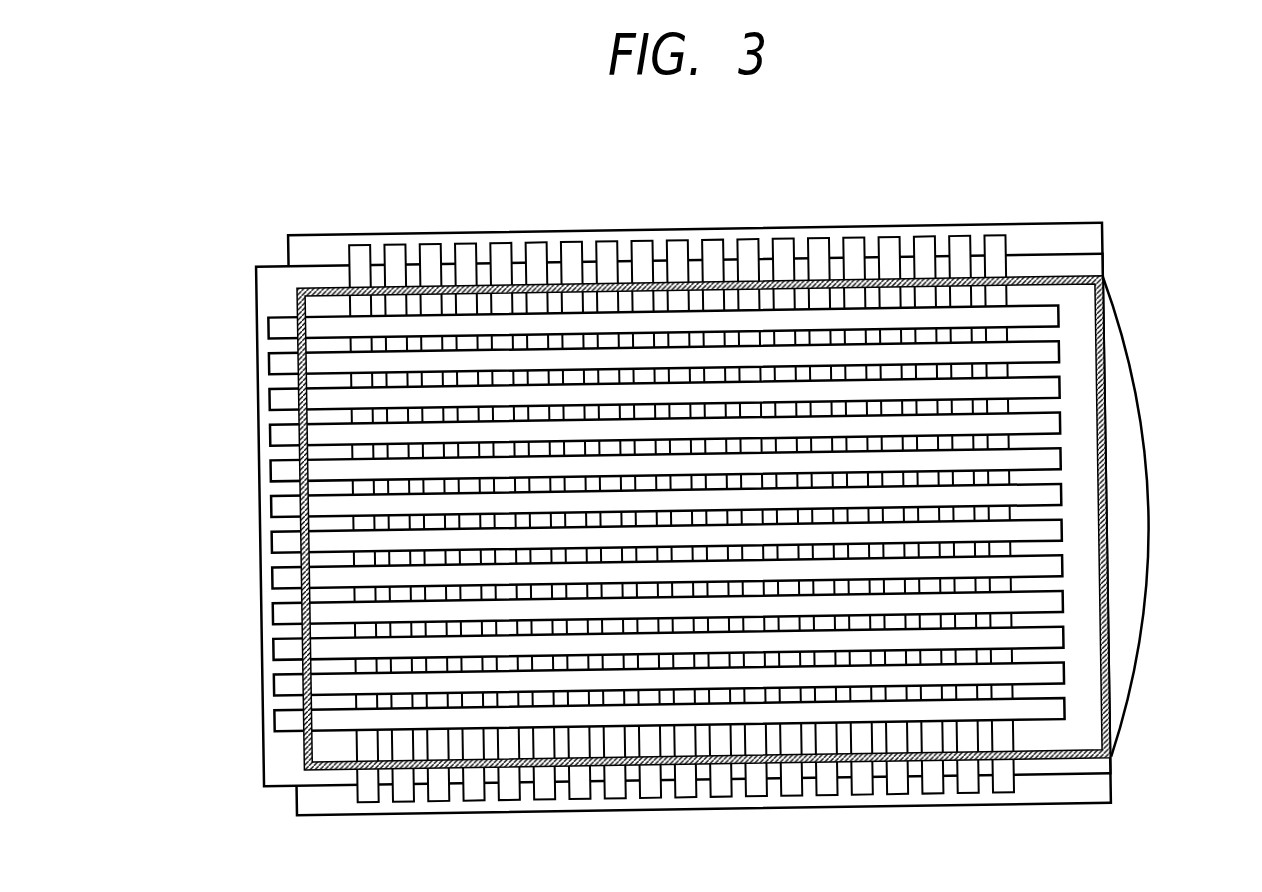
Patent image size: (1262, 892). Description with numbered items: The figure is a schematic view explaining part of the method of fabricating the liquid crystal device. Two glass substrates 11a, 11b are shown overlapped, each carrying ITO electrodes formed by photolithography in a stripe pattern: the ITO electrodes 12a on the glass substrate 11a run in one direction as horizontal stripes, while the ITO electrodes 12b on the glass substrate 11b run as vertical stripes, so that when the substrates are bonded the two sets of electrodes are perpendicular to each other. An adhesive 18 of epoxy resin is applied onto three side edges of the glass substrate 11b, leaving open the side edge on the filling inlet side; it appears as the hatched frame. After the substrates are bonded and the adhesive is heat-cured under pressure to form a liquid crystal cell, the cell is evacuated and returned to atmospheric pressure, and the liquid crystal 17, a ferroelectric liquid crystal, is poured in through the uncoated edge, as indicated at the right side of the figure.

The glass substrate 11a is at (265, 287).
The glass substrate 11b is at (323, 240).
The ITO electrodes 12a is at (275, 330).
The ITO electrodes 12b is at (538, 248).
The liquid crystal 17 is at (1160, 470).
The adhesive 18 is at (1062, 277).